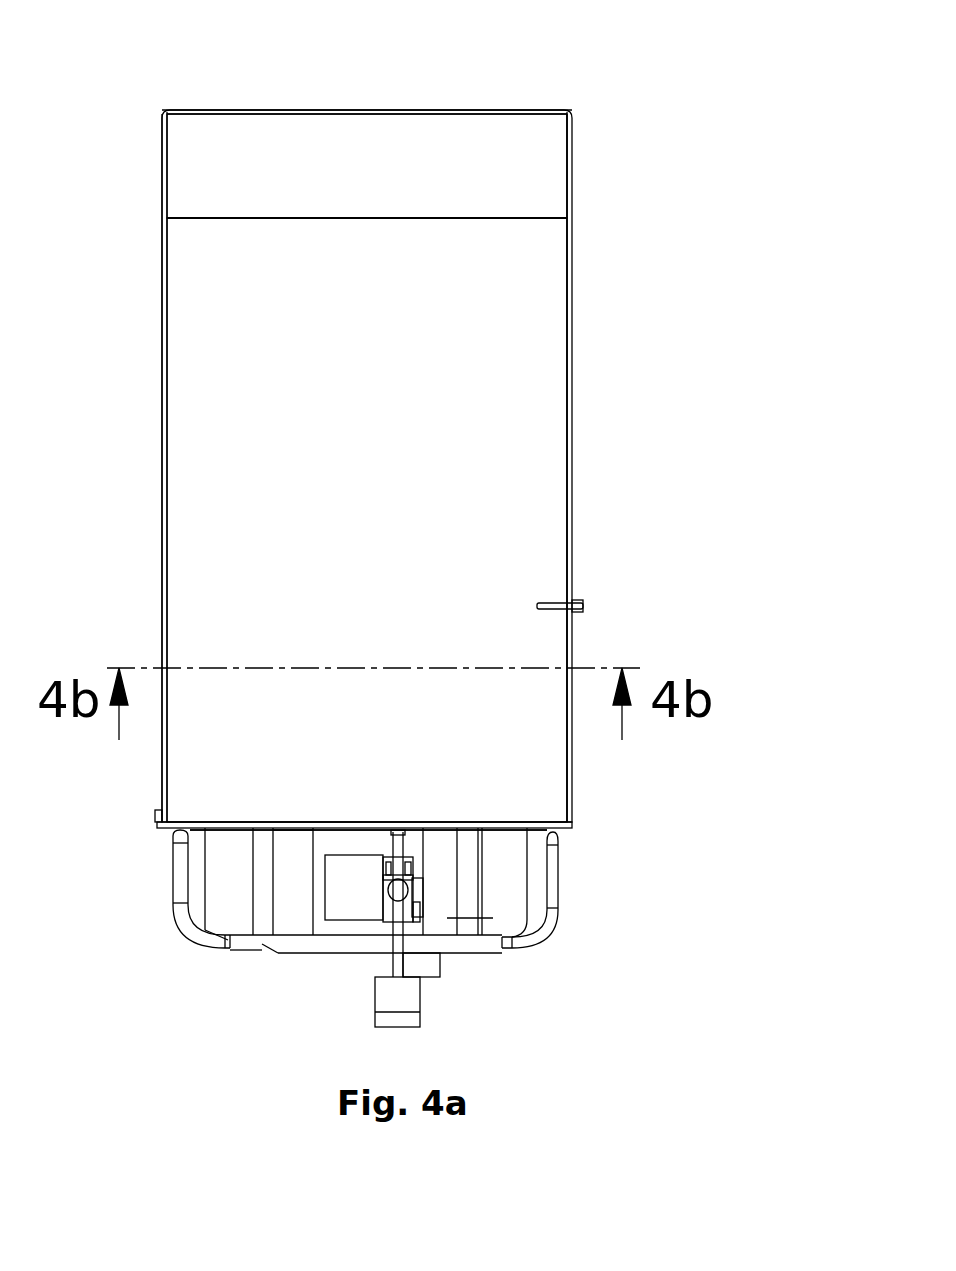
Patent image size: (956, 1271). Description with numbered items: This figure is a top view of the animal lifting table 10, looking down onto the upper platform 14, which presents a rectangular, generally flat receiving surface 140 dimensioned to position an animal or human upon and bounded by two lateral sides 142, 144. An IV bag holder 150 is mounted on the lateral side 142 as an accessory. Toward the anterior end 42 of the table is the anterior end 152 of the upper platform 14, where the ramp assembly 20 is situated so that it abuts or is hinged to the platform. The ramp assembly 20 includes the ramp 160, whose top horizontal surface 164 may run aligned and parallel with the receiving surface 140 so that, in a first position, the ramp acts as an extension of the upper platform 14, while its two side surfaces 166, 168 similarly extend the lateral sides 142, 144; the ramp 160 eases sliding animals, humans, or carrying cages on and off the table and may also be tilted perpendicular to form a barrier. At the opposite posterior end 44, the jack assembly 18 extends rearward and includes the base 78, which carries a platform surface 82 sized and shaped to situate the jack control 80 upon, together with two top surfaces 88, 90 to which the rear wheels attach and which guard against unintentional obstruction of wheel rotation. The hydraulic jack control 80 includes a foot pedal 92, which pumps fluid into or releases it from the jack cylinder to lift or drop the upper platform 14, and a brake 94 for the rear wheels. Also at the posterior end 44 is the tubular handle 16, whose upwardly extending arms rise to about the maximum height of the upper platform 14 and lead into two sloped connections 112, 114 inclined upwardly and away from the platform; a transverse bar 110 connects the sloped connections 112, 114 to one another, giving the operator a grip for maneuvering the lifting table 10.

The animal lifting table 10 is at (735, 431).
The upper platform 14 is at (193, 422).
The handle 16 is at (178, 930).
The jack assembly 18 is at (353, 900).
The ramp assembly 20 is at (555, 130).
The anterior end 42 is at (396, 75).
The posterior end 44 is at (320, 1068).
The base 78 is at (493, 918).
The jack control 80 is at (428, 944).
The platform surface 82 is at (292, 917).
The top surface 88 is at (510, 908).
The top surface 90 is at (235, 917).
The foot pedal 92 is at (403, 1013).
The brake 94 is at (430, 967).
The transverse bar 110 is at (260, 940).
The sloped connection 112 is at (553, 877).
The sloped connection 114 is at (175, 872).
The receiving surface 140 is at (382, 432).
The lateral side 142 is at (573, 638).
The lateral side 144 is at (162, 572).
The IV bag holder 150 is at (560, 602).
The anterior end 152 is at (295, 218).
The ramp 160 is at (550, 198).
The top horizontal surface 164 is at (377, 182).
The side surface 166 is at (573, 168).
The side surface 168 is at (162, 167).